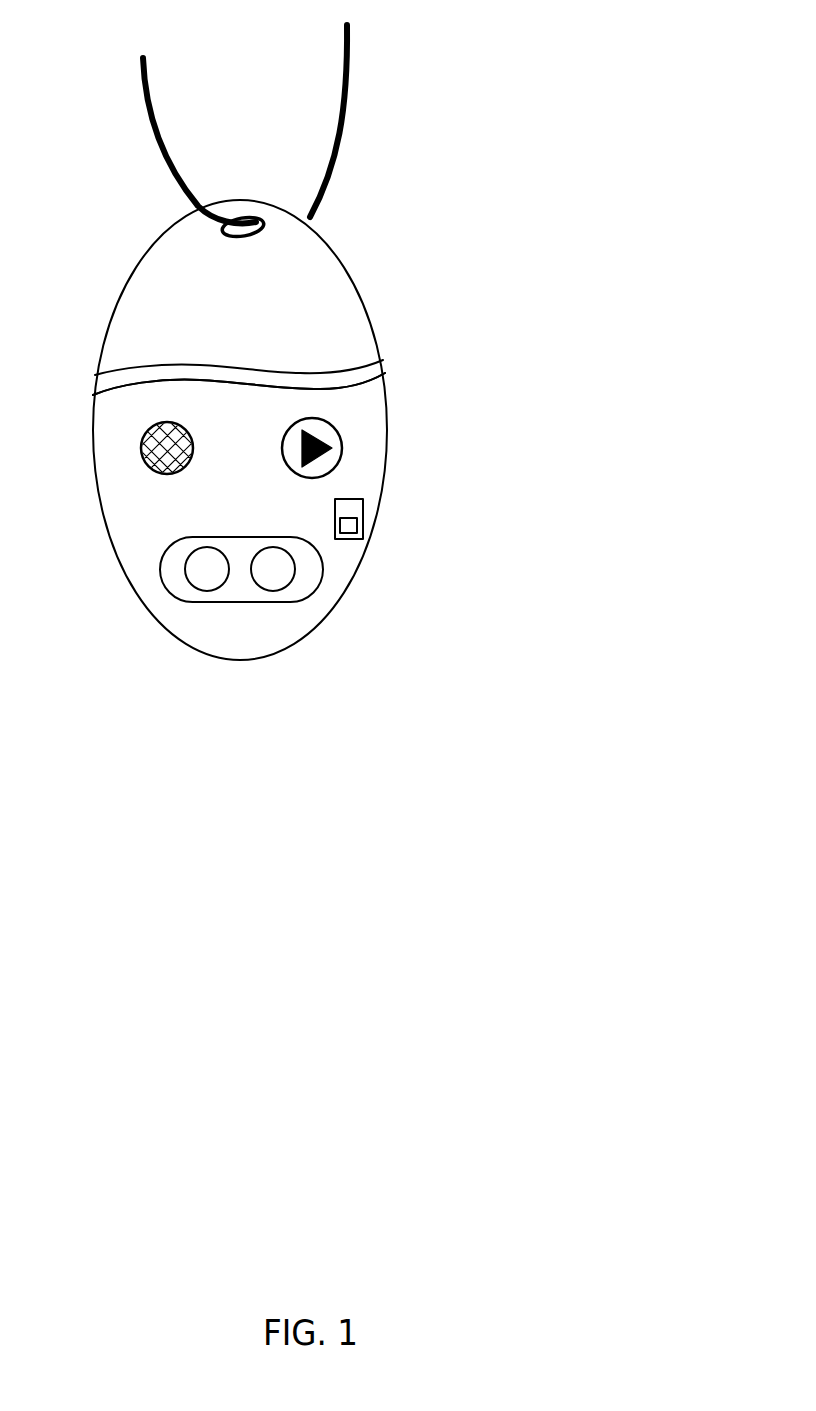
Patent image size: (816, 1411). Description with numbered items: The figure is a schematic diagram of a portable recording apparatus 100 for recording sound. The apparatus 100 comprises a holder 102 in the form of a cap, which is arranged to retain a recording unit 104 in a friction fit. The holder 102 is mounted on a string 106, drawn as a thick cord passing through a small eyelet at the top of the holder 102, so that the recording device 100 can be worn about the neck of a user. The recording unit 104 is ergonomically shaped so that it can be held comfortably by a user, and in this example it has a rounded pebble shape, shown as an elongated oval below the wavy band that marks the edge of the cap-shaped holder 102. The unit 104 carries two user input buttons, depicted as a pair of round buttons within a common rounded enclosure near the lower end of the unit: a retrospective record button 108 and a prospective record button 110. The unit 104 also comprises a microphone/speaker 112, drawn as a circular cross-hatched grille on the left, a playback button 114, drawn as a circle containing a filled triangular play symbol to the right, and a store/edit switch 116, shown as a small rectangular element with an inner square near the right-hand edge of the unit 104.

The portable recording apparatus 100 is at (603, 237).
The holder 102 is at (253, 323).
The recording unit 104 is at (260, 427).
The string 106 is at (347, 87).
The retrospective record button 108 is at (293, 577).
The prospective record button 110 is at (208, 587).
The microphone/speaker 112 is at (142, 462).
The playback button 114 is at (337, 428).
The store/edit switch 116 is at (363, 517).